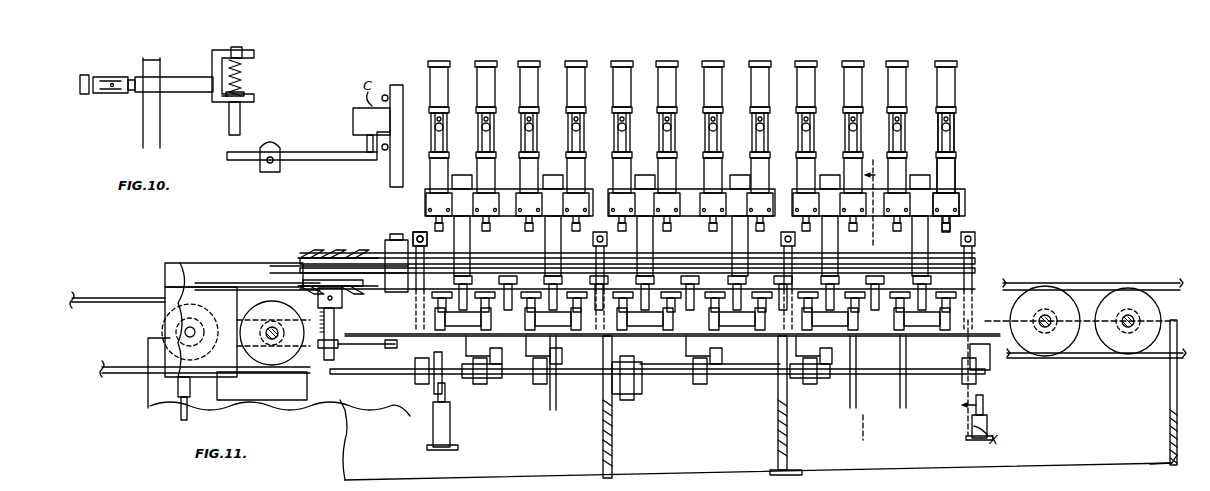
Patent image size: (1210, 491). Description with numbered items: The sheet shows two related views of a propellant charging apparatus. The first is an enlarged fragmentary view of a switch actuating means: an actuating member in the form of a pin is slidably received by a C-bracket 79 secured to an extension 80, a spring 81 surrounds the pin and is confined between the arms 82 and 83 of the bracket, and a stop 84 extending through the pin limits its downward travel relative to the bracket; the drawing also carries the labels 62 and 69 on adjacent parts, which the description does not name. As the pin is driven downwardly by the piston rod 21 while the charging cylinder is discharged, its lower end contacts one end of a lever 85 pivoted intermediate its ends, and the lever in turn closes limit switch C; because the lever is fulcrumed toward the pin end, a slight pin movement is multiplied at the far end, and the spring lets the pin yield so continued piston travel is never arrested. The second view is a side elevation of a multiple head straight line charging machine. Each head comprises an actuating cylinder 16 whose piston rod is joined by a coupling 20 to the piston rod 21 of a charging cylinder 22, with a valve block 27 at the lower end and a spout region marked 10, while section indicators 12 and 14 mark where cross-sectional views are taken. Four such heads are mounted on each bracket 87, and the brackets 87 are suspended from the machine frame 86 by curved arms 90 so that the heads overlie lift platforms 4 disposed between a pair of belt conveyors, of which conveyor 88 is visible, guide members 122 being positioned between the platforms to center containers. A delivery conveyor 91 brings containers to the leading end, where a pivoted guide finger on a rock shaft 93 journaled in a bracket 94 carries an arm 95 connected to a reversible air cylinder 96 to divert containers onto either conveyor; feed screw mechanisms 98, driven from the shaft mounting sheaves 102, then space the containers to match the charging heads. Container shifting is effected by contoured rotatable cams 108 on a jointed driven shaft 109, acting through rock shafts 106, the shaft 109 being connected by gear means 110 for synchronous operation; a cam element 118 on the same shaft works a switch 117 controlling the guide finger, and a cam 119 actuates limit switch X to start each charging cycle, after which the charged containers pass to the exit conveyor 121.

In FIG. 10, the knob 62 is at (96, 76).
In FIG. 10, the piston rod 21 is at (143, 117).
In FIG. 10, the extension 80 is at (180, 93).
In FIG. 11, the extension 80 is at (254, 266).
In FIG. 10, the C-bracket 79 is at (212, 64).
In FIG. 10, the arm of the bracket 82 is at (242, 54).
In FIG. 10, the stop 84 is at (248, 80).
In FIG. 10, the arm of the bracket 83 is at (244, 94).
In FIG. 10, the rod 69 is at (241, 112).
In FIG. 10, the spring 81 is at (226, 104).
In FIG. 10, the lever 85 is at (302, 152).
In FIG. 11, the actuating cylinder 16 is at (958, 82).
In FIG. 11, the coupling 20 is at (954, 129).
In FIG. 11, the charging cylinder 22 is at (958, 167).
In FIG. 11, the valve block 27 is at (958, 188).
In FIG. 11, the nozzle 10 is at (958, 221).
In FIG. 11, the section line 12 is at (865, 300).
In FIG. 11, the bracket 87 is at (505, 216).
In FIG. 11, the curved arm 90 is at (426, 243).
In FIG. 11, the guide member 122 is at (981, 272).
In FIG. 11, the lift platform 4 is at (432, 305).
In FIG. 11, the gear means 110 is at (258, 394).
In FIG. 11, the delivery conveyor 91 is at (94, 306).
In FIG. 11, the sheave 102 is at (150, 345).
In FIG. 11, the feed screw mechanism 98 is at (336, 258).
In FIG. 11, the bracket 94 is at (345, 306).
In FIG. 11, the rock shaft 93 is at (338, 335).
In FIG. 11, the arm 95 is at (350, 352).
In FIG. 11, the reversible air cylinder 96 is at (386, 361).
In FIG. 11, the jointed driven shaft 109 is at (350, 390).
In FIG. 11, the cam element 118 is at (444, 380).
In FIG. 11, the rock shaft 106 is at (522, 384).
In FIG. 11, the contoured rotatable cam 108 is at (586, 404).
In FIG. 11, the switch 117 is at (450, 430).
In FIG. 11, the cam 119 is at (978, 384).
In FIG. 11, the section line 14 is at (976, 414).
In FIG. 11, the exit conveyor 121 is at (1088, 286).
In FIG. 11, the belt conveyor 88 is at (1027, 363).
In FIG. 11, the machine frame 86 is at (1170, 380).